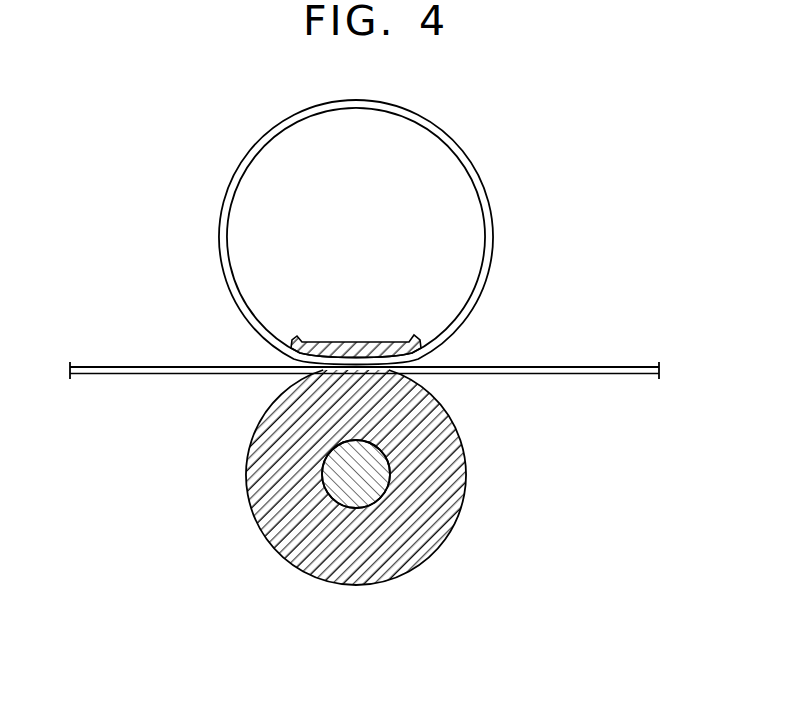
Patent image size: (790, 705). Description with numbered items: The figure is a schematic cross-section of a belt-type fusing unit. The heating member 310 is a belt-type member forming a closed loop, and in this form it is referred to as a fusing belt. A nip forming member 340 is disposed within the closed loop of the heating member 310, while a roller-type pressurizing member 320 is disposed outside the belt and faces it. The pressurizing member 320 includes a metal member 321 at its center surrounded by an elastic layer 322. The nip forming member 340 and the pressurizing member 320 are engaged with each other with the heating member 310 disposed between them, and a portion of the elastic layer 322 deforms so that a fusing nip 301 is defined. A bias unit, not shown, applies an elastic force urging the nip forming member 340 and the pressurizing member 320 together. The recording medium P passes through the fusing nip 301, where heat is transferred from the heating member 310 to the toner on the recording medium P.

The heating member 310 is at (494, 233).
The nip forming member 340 is at (308, 342).
The fusing nip 301 is at (462, 355).
The pressurizing member 320 is at (416, 477).
The metal member 321 is at (389, 474).
The elastic layer 322 is at (468, 451).
The recording medium P is at (117, 366).